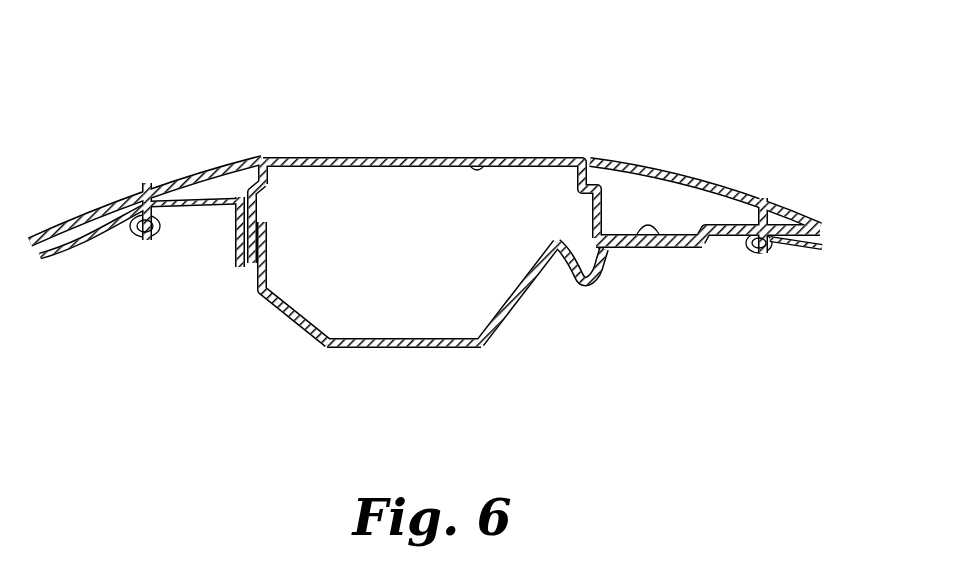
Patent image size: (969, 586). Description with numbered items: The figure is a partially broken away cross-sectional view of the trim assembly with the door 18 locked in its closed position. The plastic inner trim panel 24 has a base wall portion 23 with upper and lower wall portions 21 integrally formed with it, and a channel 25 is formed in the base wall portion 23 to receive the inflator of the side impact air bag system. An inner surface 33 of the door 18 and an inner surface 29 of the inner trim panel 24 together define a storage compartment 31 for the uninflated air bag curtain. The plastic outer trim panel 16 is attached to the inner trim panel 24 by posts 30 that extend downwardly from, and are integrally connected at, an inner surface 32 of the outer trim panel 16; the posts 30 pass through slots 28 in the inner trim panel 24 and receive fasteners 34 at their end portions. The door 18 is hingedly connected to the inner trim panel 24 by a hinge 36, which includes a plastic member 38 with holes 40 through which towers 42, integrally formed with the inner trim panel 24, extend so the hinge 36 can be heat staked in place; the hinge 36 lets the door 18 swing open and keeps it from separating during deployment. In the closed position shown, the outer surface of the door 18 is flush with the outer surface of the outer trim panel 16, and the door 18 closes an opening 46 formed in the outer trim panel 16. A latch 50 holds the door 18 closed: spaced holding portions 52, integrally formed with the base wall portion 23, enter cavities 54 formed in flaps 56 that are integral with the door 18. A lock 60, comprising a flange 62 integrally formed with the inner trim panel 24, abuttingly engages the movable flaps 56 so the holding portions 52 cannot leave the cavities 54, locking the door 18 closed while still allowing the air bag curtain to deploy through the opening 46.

The outer trim panel 16 is at (771, 198).
The door 18 is at (553, 157).
The upper and lower wall portions 21 is at (606, 252).
The base wall portion 23 is at (506, 314).
The inner trim panel 24 is at (725, 241).
The channel 25 is at (570, 266).
The slots 28 is at (796, 240).
The inner surface of the inner trim panel 29 is at (424, 328).
The posts 30 is at (806, 238).
The storage compartment 31 is at (418, 268).
The inner surface of the outer trim panel 32 is at (606, 191).
The inner surface of the door 33 is at (487, 157).
The fasteners 34 is at (770, 254).
The hinge 36 is at (618, 232).
The plastic member 38 is at (648, 226).
The holes 40 is at (690, 232).
The towers 42 is at (640, 230).
The opening 46 is at (263, 160).
The latch 50 is at (273, 255).
The holding portions 52 is at (258, 216).
The cavities 54 is at (232, 257).
The flaps 56 is at (258, 185).
The lock 60 is at (230, 263).
The flange 62 is at (240, 272).